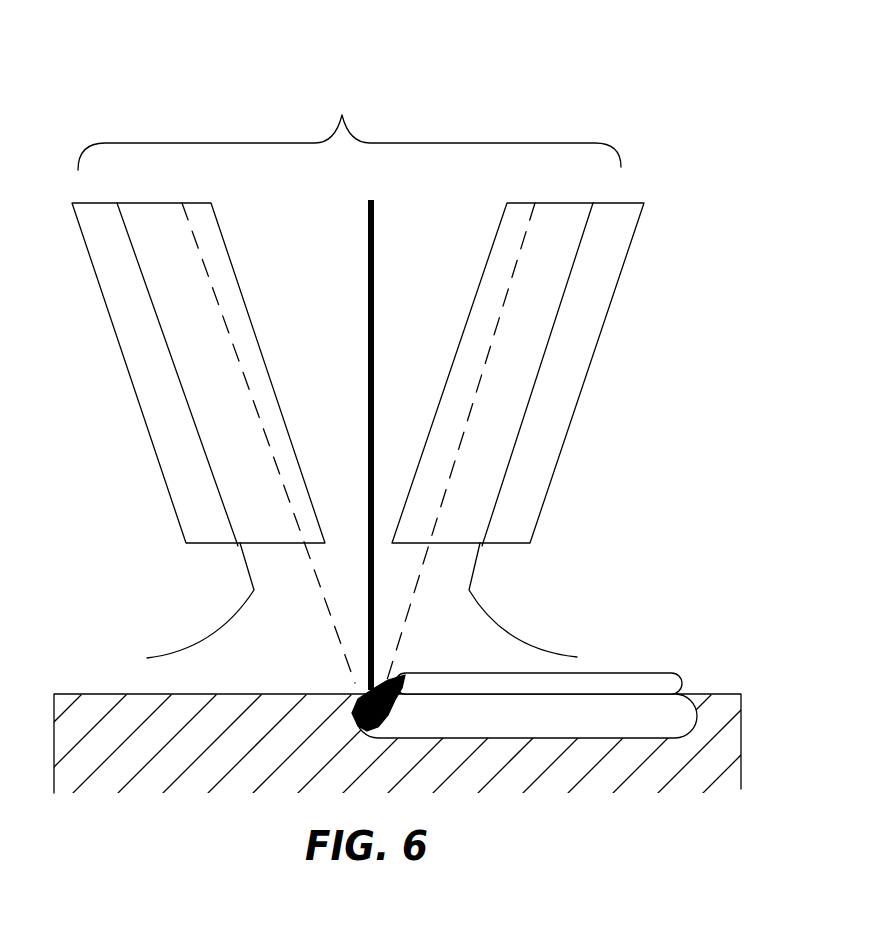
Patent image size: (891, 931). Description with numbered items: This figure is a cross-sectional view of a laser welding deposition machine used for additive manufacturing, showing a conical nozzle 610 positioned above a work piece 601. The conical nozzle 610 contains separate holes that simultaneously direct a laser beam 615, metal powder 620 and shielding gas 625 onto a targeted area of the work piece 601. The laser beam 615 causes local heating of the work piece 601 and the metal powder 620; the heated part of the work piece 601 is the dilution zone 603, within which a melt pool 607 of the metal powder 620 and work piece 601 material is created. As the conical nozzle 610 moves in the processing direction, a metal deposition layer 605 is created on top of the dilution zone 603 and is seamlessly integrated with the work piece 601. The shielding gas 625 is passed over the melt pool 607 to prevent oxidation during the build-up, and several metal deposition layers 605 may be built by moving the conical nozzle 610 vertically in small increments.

The work piece 601 is at (741, 747).
The dilution zone 603 is at (675, 712).
The metal deposition layer 605 is at (647, 687).
The melt pool 607 is at (390, 700).
The conical nozzle 610 is at (560, 133).
The laser beam 615 is at (365, 263).
The metal powder 620 is at (342, 628).
The shielding gas 625 is at (228, 617).